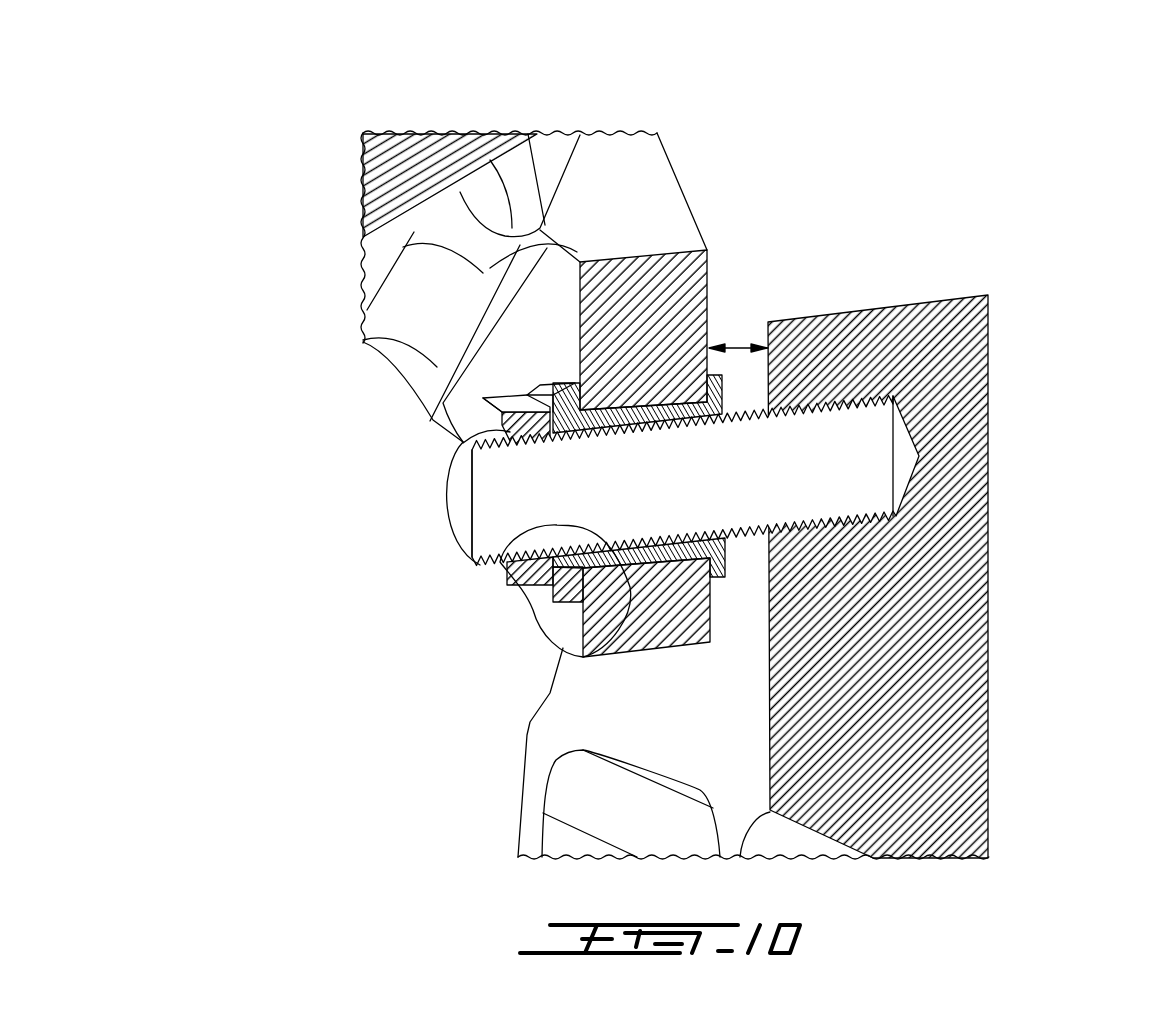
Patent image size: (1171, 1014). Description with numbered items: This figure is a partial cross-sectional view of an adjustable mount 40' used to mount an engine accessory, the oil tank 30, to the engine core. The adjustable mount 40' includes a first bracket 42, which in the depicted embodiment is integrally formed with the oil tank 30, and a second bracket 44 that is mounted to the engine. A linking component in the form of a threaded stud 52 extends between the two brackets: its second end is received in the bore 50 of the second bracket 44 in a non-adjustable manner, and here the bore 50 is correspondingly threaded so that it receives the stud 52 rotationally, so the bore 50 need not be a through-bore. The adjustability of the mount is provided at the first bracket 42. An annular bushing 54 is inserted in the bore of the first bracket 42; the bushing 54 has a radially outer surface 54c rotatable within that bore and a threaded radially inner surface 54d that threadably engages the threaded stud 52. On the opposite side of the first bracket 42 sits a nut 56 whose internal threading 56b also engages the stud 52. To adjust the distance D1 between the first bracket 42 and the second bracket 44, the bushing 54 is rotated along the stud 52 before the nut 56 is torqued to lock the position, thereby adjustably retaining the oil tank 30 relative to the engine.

The oil tank 30 is at (324, 218).
The adjustable mount 40' is at (1066, 166).
The first bracket 42 is at (637, 276).
The second bracket 44 is at (937, 715).
The bore 50 is at (907, 462).
The threaded stud 52 is at (495, 506).
The bushing 54 is at (532, 575).
The radially outer surface 54c is at (563, 643).
The threaded radially inner surface 54d is at (517, 550).
The nut 56 is at (517, 423).
The internal threading 56b is at (470, 438).
The distance D1 is at (745, 348).